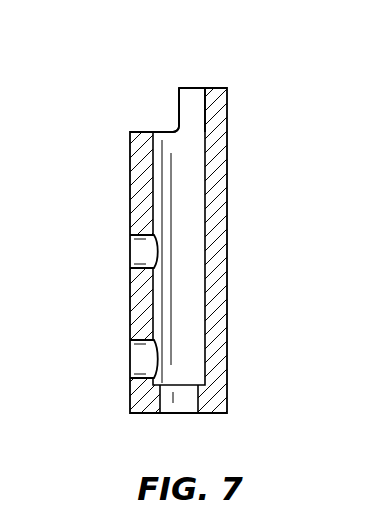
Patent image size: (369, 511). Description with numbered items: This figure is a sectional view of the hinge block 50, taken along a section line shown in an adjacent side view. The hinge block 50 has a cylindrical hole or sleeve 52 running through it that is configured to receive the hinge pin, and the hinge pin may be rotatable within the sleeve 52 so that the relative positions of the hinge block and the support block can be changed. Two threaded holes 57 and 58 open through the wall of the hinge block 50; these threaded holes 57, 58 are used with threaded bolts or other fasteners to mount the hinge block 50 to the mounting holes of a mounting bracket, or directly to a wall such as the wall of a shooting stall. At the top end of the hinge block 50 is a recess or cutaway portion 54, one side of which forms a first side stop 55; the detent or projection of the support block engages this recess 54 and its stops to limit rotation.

The hinge block 50 is at (234, 200).
The cylindrical hole or sleeve 52 is at (191, 98).
The recess or cutaway portion 54 is at (148, 108).
The first side stop 55 is at (177, 100).
The threaded hole 57 is at (147, 252).
The threaded hole 58 is at (147, 358).